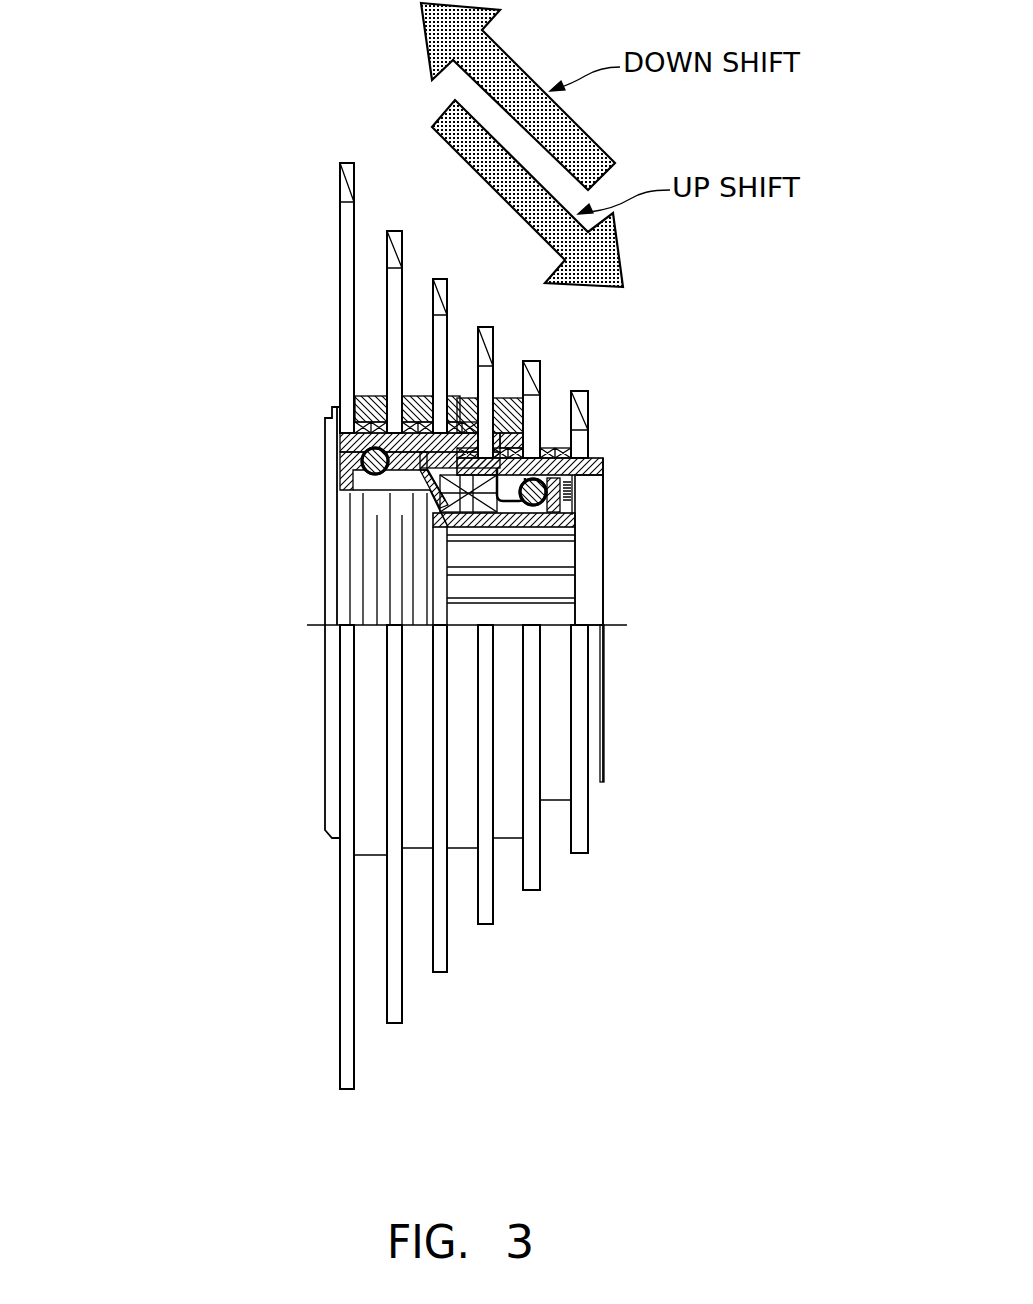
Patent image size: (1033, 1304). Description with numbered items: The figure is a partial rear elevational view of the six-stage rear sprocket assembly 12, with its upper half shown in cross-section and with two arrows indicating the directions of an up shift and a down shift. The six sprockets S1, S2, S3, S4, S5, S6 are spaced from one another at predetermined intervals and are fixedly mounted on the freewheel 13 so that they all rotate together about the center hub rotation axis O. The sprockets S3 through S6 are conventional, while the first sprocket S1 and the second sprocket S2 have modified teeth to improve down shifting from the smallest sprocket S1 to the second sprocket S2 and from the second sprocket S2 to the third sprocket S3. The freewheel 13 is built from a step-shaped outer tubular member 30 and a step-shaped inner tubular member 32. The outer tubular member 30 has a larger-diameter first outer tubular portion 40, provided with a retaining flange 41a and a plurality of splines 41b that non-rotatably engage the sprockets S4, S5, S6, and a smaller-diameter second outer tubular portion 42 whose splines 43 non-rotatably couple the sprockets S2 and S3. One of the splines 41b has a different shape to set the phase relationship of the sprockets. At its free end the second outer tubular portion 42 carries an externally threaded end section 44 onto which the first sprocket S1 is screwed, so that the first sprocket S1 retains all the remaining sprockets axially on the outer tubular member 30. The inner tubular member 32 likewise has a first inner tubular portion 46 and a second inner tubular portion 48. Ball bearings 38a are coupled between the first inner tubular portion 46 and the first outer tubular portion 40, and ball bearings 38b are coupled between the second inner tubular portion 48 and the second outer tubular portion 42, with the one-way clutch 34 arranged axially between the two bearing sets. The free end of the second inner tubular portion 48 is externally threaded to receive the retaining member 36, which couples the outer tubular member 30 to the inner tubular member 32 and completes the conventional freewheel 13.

The rear sprocket assembly 12 is at (550, 658).
The freewheel 13 is at (620, 490).
The outer tubular member 30 is at (612, 464).
The inner tubular member 32 is at (588, 521).
The one-way clutch 34 is at (530, 580).
The retaining member 36 is at (565, 513).
The ball bearings 38a is at (345, 470).
The ball bearings 38b is at (487, 514).
The first outer tubular portion 40 is at (338, 444).
The retaining flange 41a is at (322, 422).
The splines 41b is at (372, 397).
The second outer tubular portion 42 is at (590, 443).
The splines 43 is at (535, 440).
The threaded end section 44 is at (612, 464).
The first inner tubular portion 46 is at (380, 478).
The second inner tubular portion 48 is at (430, 583).
The center hub rotation axis O is at (311, 626).
The first sprocket S1 is at (588, 853).
The second sprocket S2 is at (540, 890).
The third sprocket S3 is at (493, 924).
The fourth sprocket S4 is at (447, 972).
The fifth sprocket S5 is at (403, 1023).
The sixth sprocket S6 is at (355, 1089).